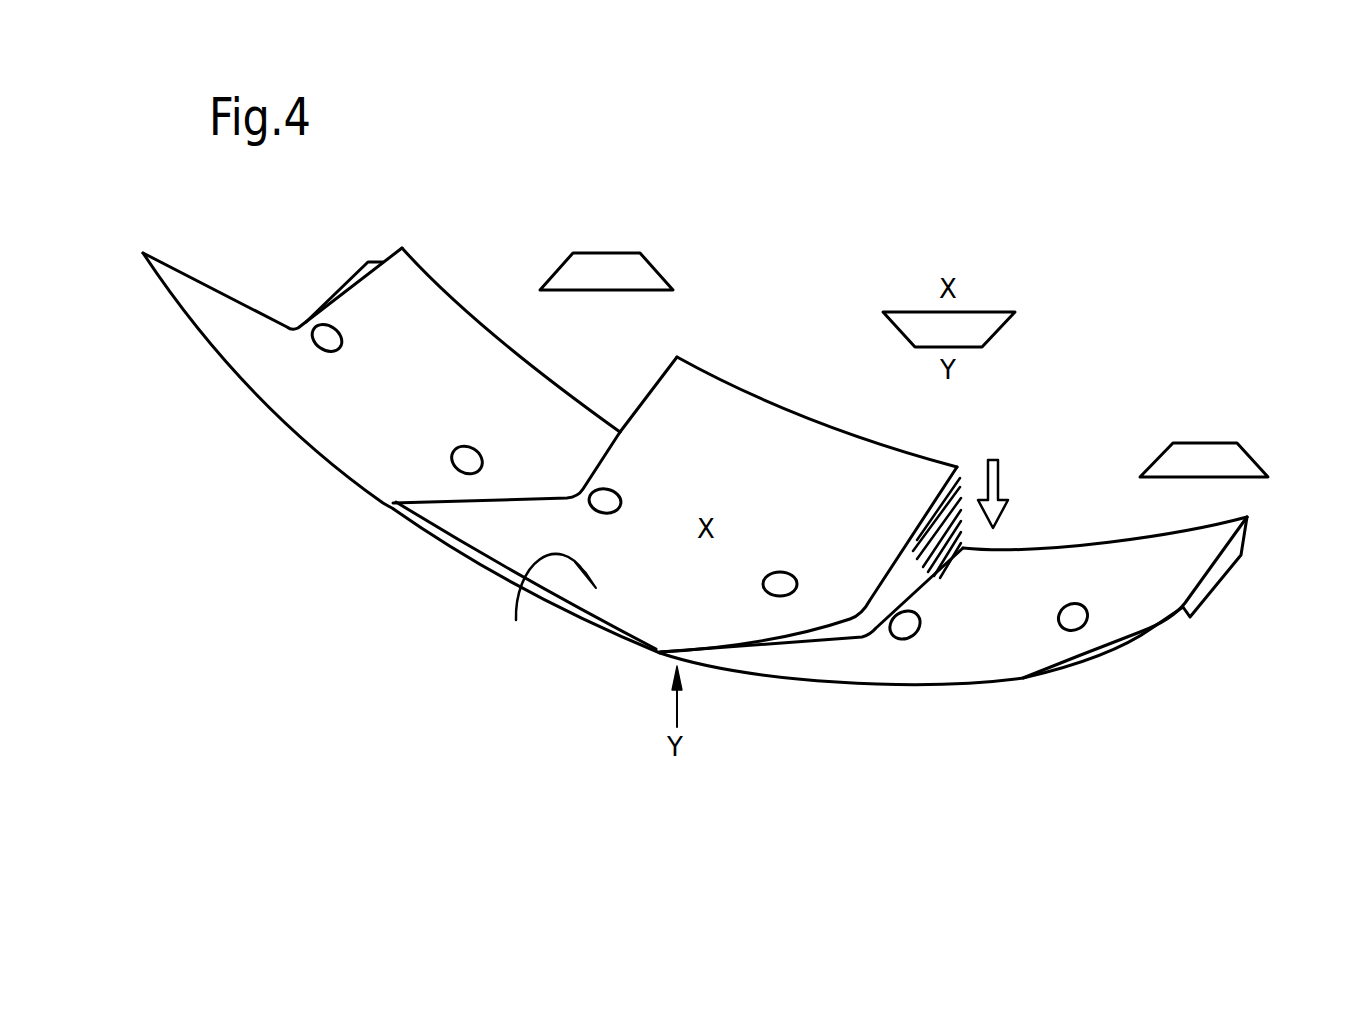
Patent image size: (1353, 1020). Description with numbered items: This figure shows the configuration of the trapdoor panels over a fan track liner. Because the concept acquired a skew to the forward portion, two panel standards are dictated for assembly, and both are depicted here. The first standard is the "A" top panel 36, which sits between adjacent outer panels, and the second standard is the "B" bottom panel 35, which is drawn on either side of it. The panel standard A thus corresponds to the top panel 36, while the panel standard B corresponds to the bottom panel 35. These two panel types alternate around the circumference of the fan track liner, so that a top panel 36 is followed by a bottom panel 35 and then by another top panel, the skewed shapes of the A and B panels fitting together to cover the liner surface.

The bottom panel 35 is at (292, 433).
The top panel 36 is at (722, 393).
The top panel standard A is at (803, 415).
The bottom panel standard B is at (487, 325).